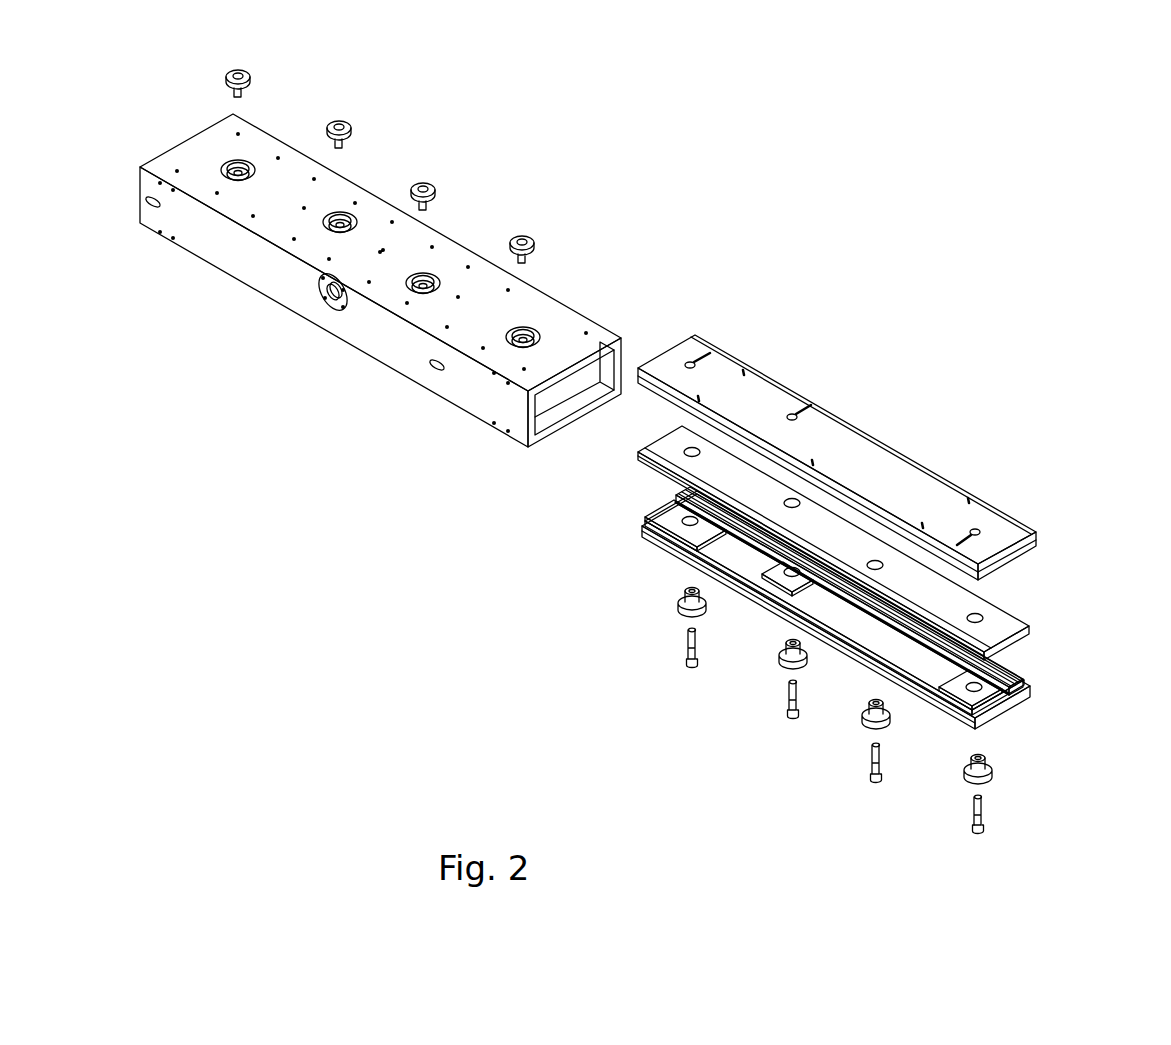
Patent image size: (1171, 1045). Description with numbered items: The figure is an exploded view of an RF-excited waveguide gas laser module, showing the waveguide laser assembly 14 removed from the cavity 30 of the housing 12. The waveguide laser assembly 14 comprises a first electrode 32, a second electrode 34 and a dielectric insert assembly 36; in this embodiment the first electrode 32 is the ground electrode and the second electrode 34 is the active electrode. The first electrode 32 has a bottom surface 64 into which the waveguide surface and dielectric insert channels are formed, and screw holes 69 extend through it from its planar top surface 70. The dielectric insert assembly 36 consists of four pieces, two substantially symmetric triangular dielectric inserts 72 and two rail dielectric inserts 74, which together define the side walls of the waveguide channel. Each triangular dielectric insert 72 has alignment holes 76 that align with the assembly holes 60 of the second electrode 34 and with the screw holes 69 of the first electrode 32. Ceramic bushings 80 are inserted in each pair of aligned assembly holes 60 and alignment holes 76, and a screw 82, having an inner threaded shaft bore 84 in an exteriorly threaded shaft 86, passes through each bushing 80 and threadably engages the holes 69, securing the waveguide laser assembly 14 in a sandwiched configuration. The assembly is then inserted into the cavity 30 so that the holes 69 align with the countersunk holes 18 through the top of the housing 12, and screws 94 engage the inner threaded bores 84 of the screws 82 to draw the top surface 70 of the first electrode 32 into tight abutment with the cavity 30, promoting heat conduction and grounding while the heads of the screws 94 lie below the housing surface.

The housing 12 is at (447, 280).
The waveguide laser assembly 14 is at (854, 660).
The holes 18 is at (526, 332).
The cavity 30 is at (596, 372).
The first electrode 32 is at (1000, 530).
The second electrode 34 is at (1002, 705).
The dielectric insert assembly 36 is at (1102, 537).
The assembly holes 60 is at (973, 682).
The bottom surface 64 is at (1025, 571).
The screw holes 69 is at (790, 412).
The top surface 70 is at (864, 438).
The triangular dielectric inserts 72 is at (812, 625).
The rail dielectric inserts 74 is at (849, 660).
The alignment holes 76 is at (975, 617).
The ceramic bushings 80 is at (990, 772).
The screw 82 is at (858, 765).
The inner threaded shaft bore 84 is at (972, 794).
The exteriorly threaded shaft 86 is at (980, 824).
The screws 94 is at (425, 178).